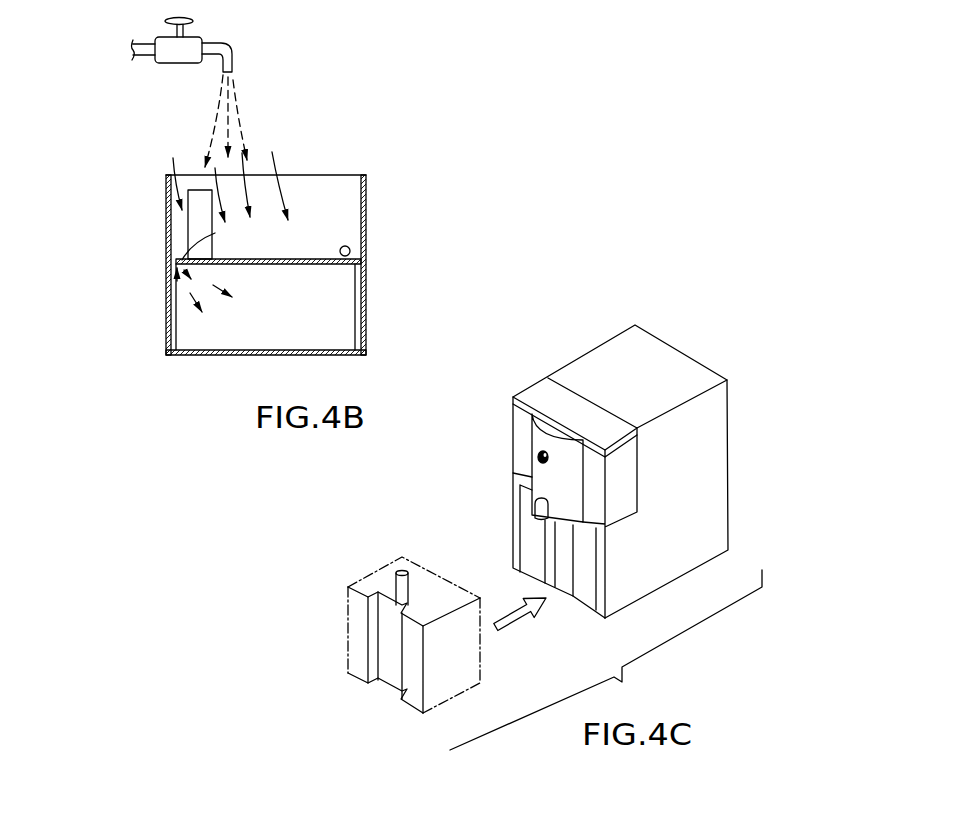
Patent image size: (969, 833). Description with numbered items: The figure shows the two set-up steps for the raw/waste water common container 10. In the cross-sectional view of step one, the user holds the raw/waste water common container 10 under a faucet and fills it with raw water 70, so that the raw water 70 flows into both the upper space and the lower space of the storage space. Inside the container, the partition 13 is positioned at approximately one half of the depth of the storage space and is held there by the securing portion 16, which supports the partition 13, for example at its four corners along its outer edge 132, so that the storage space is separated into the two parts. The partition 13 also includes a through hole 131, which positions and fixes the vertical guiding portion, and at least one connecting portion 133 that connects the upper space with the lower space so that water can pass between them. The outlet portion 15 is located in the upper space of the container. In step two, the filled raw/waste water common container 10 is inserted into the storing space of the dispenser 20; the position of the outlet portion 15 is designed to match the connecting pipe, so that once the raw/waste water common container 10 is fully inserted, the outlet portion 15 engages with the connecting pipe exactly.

In FIG. 4B, the raw/waste water common container 10 is at (367, 180).
In FIG. 4C, the raw/waste water common container 10 is at (567, 592).
In FIG. 4B, the partition 13 is at (62, 188).
In FIG. 4B, the through hole 131 is at (193, 227).
In FIG. 4B, the connecting portion 133 is at (180, 262).
In FIG. 4B, the outer edge 132 is at (214, 244).
In FIG. 4B, the outlet portion 15 is at (348, 246).
In FIG. 4B, the securing portion 16 is at (357, 305).
In FIG. 4B, the raw water 70 is at (238, 100).
In FIG. 4C, the dispenser 20 is at (712, 363).